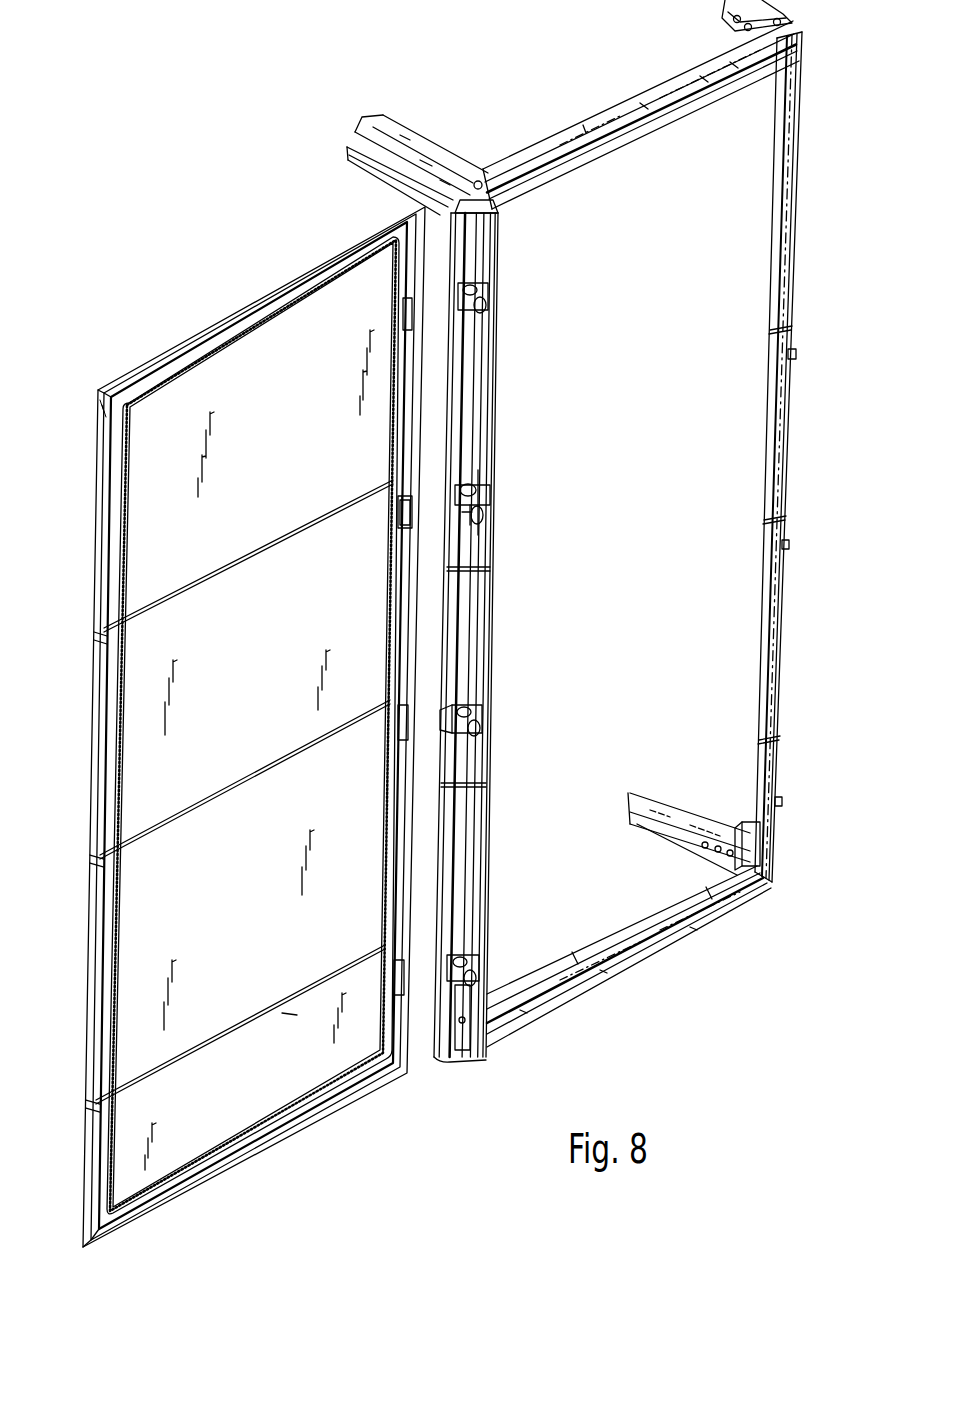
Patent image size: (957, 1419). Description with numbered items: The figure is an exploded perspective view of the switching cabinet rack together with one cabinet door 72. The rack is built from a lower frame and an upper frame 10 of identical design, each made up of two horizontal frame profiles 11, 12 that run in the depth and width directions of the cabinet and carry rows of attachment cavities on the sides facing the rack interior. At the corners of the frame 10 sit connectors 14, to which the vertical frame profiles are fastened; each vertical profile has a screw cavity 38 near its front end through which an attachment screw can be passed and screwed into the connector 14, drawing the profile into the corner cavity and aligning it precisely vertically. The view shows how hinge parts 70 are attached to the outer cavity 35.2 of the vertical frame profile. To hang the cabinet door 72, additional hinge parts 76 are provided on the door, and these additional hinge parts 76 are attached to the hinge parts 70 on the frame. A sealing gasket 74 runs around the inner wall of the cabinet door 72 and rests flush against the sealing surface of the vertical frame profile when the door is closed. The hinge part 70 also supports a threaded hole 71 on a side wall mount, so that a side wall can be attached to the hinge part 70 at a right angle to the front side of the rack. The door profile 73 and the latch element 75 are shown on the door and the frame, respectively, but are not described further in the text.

The lower/upper frame 10 is at (595, 567).
The horizontal frame profile 11 is at (655, 131).
The horizontal frame profile 12 is at (423, 152).
The connector 14 is at (742, 830).
The outer cavity 35.2 is at (499, 657).
The screw cavity 38 is at (455, 1058).
The hinge part 70 is at (482, 493).
The threaded hole 71 is at (462, 512).
The cabinet door 72 is at (242, 352).
The door frame profile 73 is at (140, 370).
The sealing gasket 74 is at (234, 727).
The latch element 75 is at (796, 355).
The additional hinge part 76 is at (393, 513).